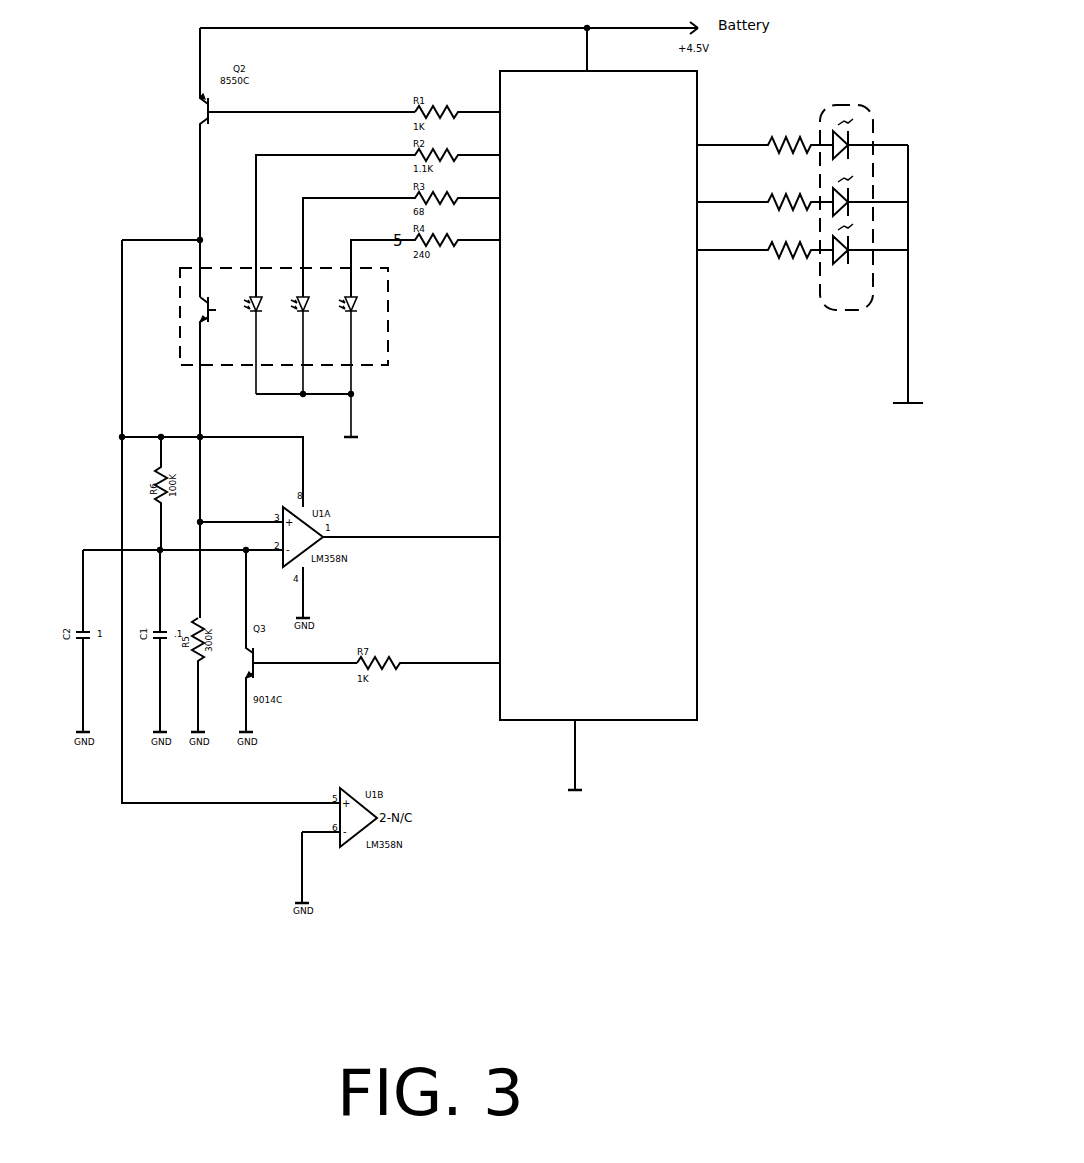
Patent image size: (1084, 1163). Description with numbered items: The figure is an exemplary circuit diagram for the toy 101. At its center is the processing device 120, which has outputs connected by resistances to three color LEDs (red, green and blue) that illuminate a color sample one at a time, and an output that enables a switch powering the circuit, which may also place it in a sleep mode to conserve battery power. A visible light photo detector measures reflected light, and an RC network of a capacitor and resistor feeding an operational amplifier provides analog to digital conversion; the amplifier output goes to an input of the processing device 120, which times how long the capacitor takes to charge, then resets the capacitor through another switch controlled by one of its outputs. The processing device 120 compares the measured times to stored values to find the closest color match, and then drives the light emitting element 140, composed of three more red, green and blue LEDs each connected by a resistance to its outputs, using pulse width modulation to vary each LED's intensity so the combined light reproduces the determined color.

The toy 101 is at (388, 330).
The processing device 120 is at (632, 361).
The light emitting element 140 is at (847, 105).